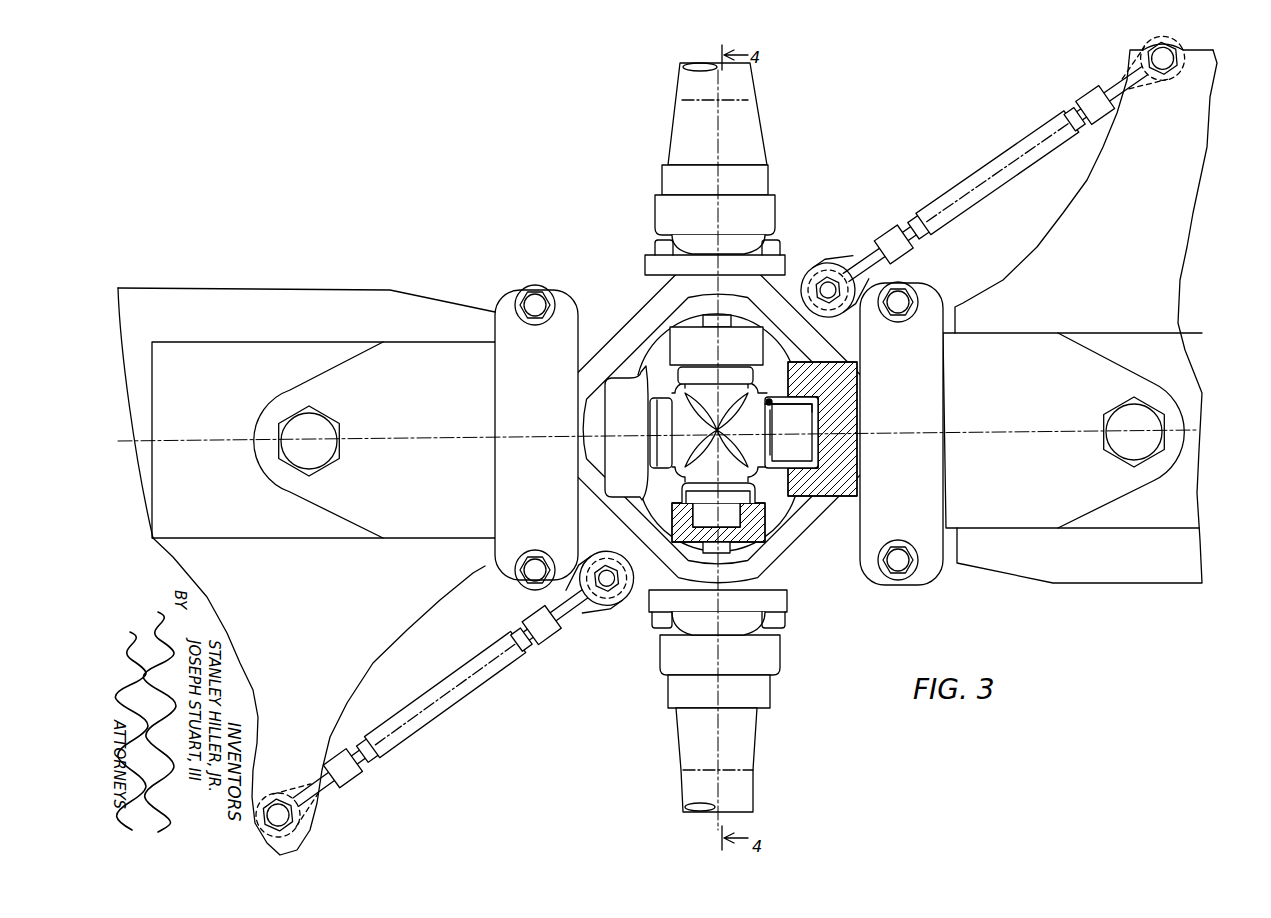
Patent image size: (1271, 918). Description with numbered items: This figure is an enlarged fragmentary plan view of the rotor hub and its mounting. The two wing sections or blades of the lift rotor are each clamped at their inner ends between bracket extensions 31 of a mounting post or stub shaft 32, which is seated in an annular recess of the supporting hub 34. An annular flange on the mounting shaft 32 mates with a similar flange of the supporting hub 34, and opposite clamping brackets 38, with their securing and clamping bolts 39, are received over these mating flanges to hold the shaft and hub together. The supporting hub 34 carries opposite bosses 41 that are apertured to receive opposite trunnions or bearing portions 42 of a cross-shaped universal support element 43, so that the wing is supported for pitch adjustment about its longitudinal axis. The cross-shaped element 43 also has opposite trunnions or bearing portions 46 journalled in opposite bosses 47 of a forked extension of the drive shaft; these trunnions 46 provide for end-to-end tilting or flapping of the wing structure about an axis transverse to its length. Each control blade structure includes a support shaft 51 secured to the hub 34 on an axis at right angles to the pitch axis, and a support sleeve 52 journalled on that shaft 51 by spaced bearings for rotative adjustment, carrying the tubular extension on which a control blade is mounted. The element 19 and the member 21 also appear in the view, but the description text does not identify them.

The gimbal housing 19 is at (718, 441).
The adjustable link rod 21 is at (372, 668).
The bracket extensions 31 is at (288, 392).
The mounting post or stub shaft 32 is at (667, 449).
The supporting hub 34 is at (622, 310).
The clamping brackets 38 is at (583, 286).
The securing and clamping bolts 39 is at (537, 298).
The bosses 41 is at (793, 390).
The trunnions or bearing portions 42 is at (795, 460).
The cross-shaped universal support element 43 is at (676, 482).
The trunnions or bearing portions 46 is at (700, 513).
The bosses 47 is at (765, 520).
The support shaft 51 is at (700, 246).
The support sleeve 52 is at (762, 110).